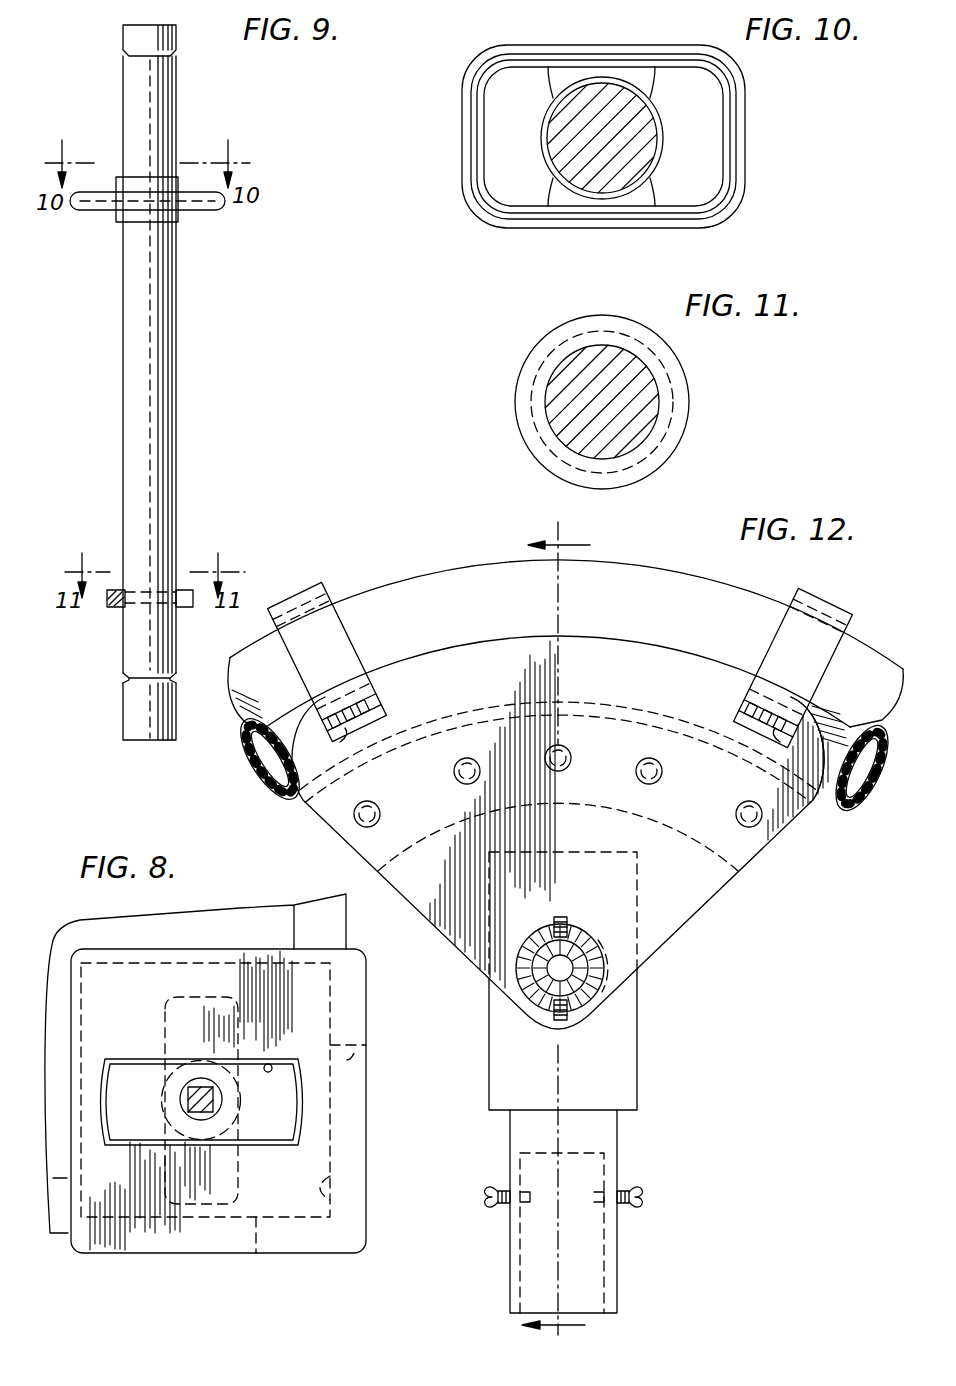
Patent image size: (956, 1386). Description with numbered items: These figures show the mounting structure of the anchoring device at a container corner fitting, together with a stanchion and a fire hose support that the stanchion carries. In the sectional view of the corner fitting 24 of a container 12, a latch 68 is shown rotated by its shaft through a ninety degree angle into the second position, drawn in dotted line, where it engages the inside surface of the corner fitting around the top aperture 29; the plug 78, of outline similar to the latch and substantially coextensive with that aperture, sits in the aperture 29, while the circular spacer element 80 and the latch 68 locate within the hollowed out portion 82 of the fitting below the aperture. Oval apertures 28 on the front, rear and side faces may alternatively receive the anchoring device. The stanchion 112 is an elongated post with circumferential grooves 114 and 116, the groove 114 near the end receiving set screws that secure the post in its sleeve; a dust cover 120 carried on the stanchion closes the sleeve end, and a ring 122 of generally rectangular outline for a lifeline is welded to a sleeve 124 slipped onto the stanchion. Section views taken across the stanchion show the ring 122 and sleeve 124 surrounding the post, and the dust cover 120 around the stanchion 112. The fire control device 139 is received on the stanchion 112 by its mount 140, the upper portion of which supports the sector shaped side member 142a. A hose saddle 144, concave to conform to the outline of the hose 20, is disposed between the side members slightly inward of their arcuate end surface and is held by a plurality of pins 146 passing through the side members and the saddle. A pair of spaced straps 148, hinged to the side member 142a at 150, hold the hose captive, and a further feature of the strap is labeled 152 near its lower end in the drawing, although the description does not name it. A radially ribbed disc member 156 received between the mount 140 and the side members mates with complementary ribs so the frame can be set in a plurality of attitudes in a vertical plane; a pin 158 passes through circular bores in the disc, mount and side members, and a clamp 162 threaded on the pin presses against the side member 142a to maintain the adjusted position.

In FIG. 8, the container 12 is at (334, 935).
In FIG. 8, the corner fitting 24 is at (352, 1013).
In FIG. 8, the aperture 28 is at (352, 1052).
In FIG. 8, the aperture 29 is at (270, 1064).
In FIG. 8, the latch 68 is at (162, 1025).
In FIG. 8, the plug 78 is at (272, 1124).
In FIG. 8, the spacer element 80 is at (232, 1113).
In FIG. 8, the hollowed out portion 82 is at (330, 1190).
In FIG. 12, the hose 20 is at (258, 777).
In FIG. 9, the stanchion 112 is at (165, 415).
In FIG. 11, the stanchion 112 is at (640, 415).
In FIG. 9, the groove 114 is at (128, 677).
In FIG. 9, the groove 116 is at (125, 58).
In FIG. 9, the dust cover 120 is at (190, 607).
In FIG. 11, the dust cover 120 is at (660, 452).
In FIG. 9, the ring 122 is at (106, 210).
In FIG. 10, the ring 122 is at (500, 212).
In FIG. 9, the sleeve 124 is at (178, 212).
In FIG. 10, the sleeve 124 is at (665, 148).
In FIG. 12, the fire control device 139 is at (556, 928).
In FIG. 12, the mount 140 is at (620, 1078).
In FIG. 12, the side member 142a is at (738, 874).
In FIG. 12, the hose saddle 144 is at (793, 836).
In FIG. 12, the pins 146 is at (462, 784).
In FIG. 12, the straps 148 is at (334, 633).
In FIG. 12, the hinge 150 is at (352, 710).
In FIG. 12, the pad lip 152 is at (374, 727).
In FIG. 12, the disc member 156 is at (584, 936).
In FIG. 12, the pin 158 is at (568, 970).
In FIG. 12, the clamp 162 is at (553, 922).